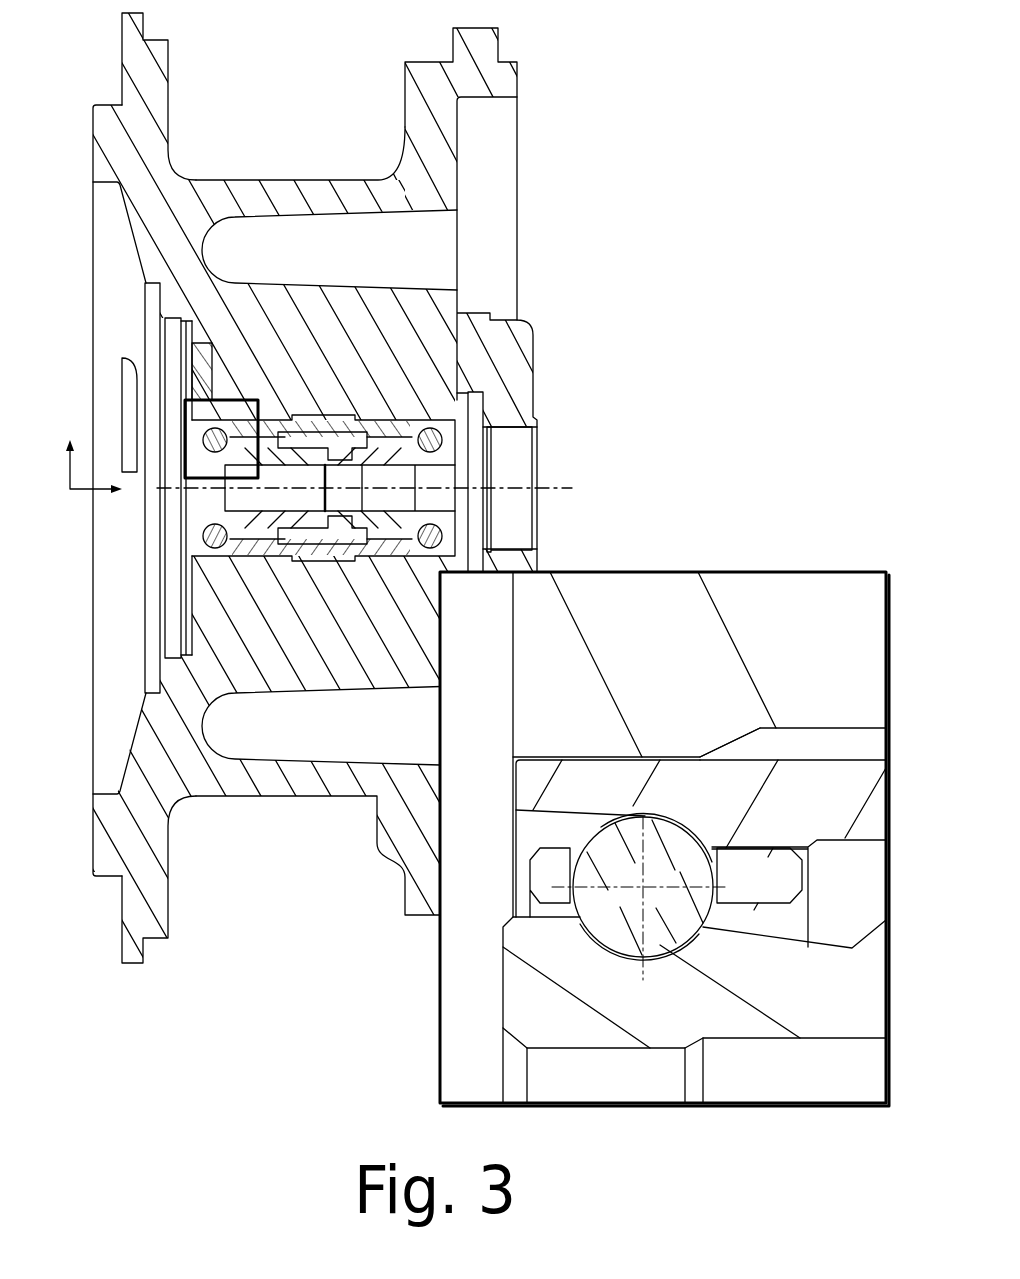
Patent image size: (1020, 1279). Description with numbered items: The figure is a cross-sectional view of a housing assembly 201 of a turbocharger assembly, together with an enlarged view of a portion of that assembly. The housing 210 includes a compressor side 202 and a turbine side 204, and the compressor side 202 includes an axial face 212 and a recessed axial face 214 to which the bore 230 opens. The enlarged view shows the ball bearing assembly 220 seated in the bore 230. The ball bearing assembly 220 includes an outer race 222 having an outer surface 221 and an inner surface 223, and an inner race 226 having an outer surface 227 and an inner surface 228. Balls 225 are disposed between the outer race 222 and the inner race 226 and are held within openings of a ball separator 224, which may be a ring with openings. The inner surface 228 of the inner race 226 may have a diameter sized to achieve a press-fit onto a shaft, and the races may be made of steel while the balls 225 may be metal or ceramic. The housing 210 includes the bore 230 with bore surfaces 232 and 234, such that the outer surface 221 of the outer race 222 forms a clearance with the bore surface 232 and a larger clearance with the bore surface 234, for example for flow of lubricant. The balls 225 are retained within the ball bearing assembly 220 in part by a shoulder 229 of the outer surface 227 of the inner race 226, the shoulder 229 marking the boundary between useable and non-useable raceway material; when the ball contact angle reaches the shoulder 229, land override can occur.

The housing assembly 201 is at (636, 52).
The compressor side 202 is at (98, 70).
The turbine side 204 is at (560, 140).
The housing 210 is at (155, 214).
The axial face 212 is at (93, 160).
The recessed axial face 214 is at (193, 574).
The ball bearing assembly 220 is at (266, 586).
The outer surface 221 is at (852, 758).
The outer race 222 is at (797, 814).
The inner surface 223 is at (676, 818).
The ball separator 224 is at (740, 886).
The balls 225 is at (625, 898).
The inner race 226 is at (775, 1004).
The outer surface 227 is at (640, 957).
The inner surface 228 is at (585, 1091).
The shoulder 229 is at (575, 917).
The bore 230 is at (291, 395).
The bore surface 232 is at (690, 756).
The bore surface 234 is at (792, 727).